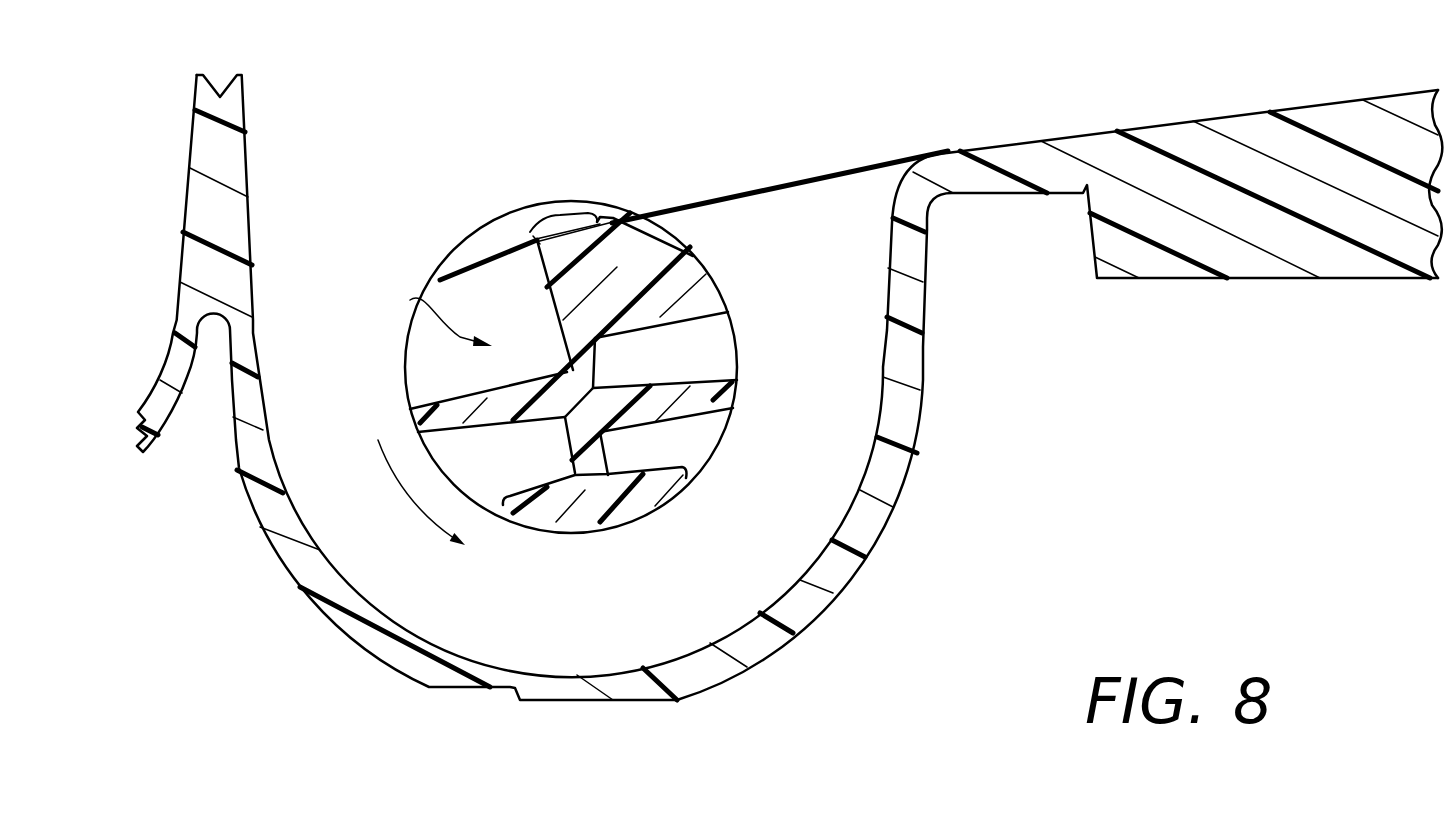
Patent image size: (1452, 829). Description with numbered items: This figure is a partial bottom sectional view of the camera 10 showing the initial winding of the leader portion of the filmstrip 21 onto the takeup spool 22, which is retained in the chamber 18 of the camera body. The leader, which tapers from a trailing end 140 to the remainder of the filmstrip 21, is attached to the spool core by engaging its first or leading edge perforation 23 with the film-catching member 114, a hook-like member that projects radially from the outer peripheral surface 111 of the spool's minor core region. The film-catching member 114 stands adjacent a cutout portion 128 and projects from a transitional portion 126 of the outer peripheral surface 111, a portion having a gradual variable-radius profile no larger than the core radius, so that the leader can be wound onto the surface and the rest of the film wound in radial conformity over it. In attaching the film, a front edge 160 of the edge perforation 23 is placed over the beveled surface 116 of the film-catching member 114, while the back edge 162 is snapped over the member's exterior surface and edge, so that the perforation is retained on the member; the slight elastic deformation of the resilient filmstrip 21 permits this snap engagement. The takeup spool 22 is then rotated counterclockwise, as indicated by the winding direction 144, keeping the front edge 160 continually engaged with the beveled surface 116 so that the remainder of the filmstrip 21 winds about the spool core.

The camera 10 is at (1030, 348).
The takeup spool chamber 18 is at (512, 619).
The filmstrip 21 is at (790, 165).
The takeup spool 22 is at (654, 506).
The edge perforation 23 is at (603, 222).
The outer peripheral surface 111 is at (715, 290).
The film-catching member 114 is at (540, 232).
The beveled surface 116 is at (530, 243).
The transitional portion 126 is at (622, 212).
The cutout portion 128 is at (425, 316).
The trailing end 140 is at (485, 258).
The flow direction arrow 144 is at (397, 473).
The front edge 160 is at (523, 229).
The back edge 162 is at (600, 238).